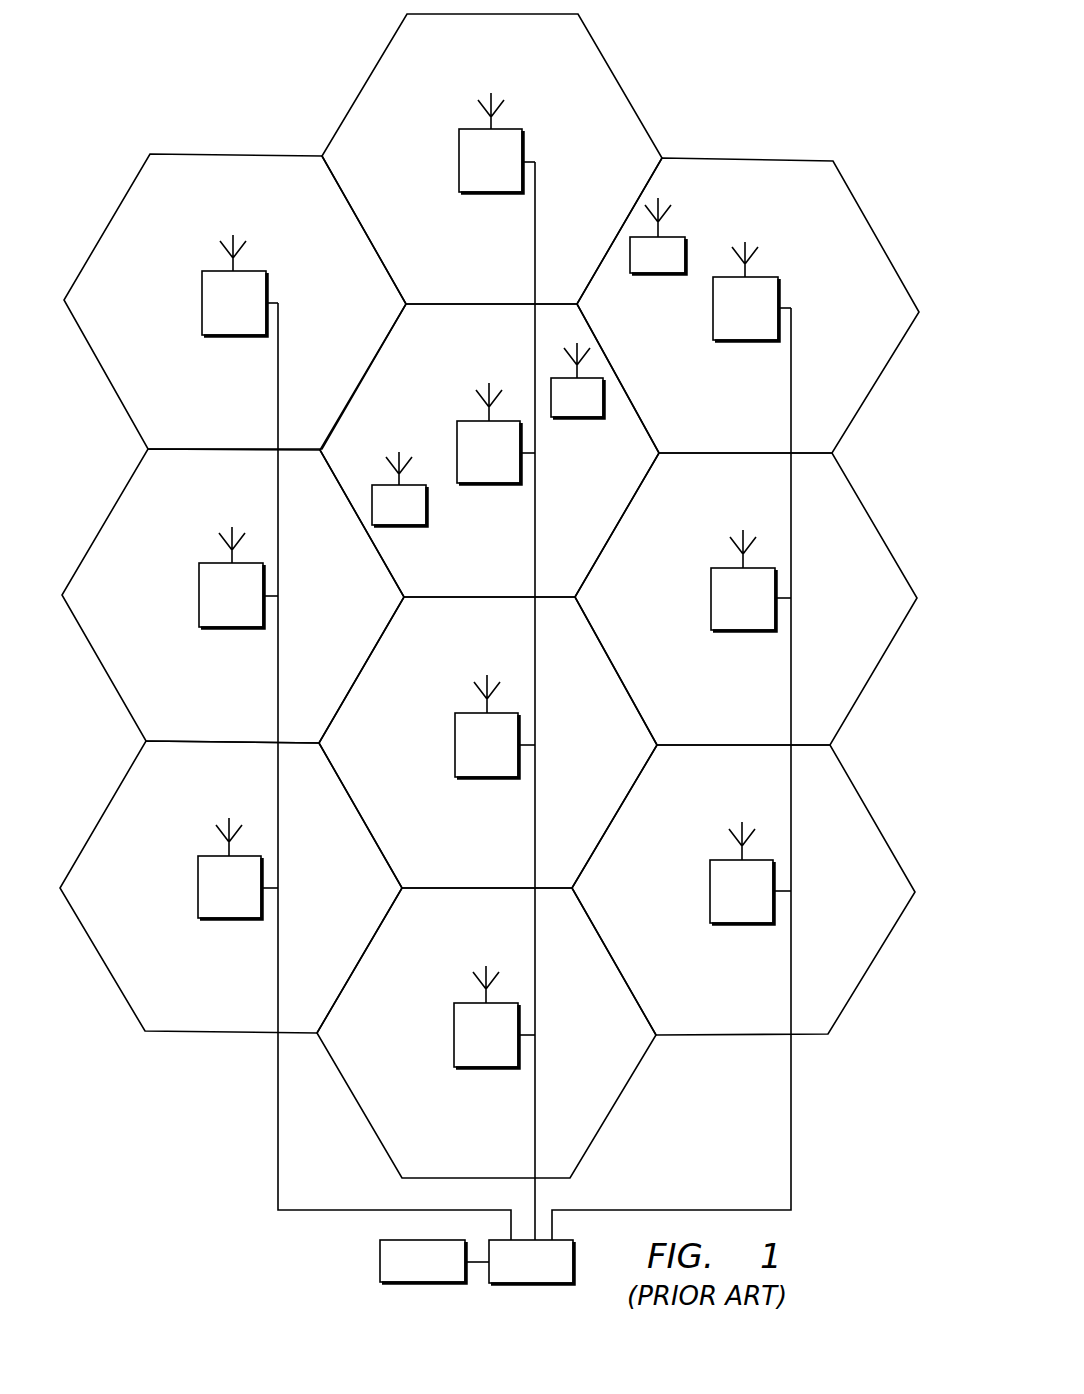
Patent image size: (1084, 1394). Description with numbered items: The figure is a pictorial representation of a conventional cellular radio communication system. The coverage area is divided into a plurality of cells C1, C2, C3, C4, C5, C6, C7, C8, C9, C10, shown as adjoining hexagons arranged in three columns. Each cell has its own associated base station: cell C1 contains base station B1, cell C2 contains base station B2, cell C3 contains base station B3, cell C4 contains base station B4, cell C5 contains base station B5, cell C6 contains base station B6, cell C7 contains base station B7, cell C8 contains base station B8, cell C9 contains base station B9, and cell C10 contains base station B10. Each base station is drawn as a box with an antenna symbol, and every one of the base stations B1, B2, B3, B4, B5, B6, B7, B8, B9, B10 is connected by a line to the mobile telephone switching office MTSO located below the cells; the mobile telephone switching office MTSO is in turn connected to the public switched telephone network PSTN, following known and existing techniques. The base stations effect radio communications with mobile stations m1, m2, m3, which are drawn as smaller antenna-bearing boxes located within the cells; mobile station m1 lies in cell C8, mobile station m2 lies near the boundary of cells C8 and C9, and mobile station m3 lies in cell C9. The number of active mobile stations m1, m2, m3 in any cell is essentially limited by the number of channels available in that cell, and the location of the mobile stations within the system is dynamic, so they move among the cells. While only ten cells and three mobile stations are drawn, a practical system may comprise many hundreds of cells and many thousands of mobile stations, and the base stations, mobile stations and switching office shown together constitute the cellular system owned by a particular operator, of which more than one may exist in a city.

The cell C1 is at (692, 727).
The cell C2 is at (692, 1019).
The cell C3 is at (436, 1162).
The cell C4 is at (181, 1012).
The cell C5 is at (179, 724).
The cell C6 is at (182, 432).
The cell C7 is at (439, 288).
The cell C8 is at (694, 437).
The cell C9 is at (439, 581).
The cell C10 is at (443, 872).
The base station B1 is at (751, 580).
The base station B2 is at (750, 873).
The base station B3 is at (494, 1017).
The base station B4 is at (238, 868).
The base station B5 is at (238, 577).
The base station B6 is at (240, 285).
The base station B7 is at (497, 143).
The base station B8 is at (752, 291).
The base station B9 is at (496, 433).
The base station B10 is at (495, 726).
The mobile station m1 is at (658, 236).
The mobile station m2 is at (577, 380).
The mobile station m3 is at (399, 489).
The mobile telephone switching office MTSO is at (531, 1262).
The public switched telephone network PSTN is at (434, 1261).